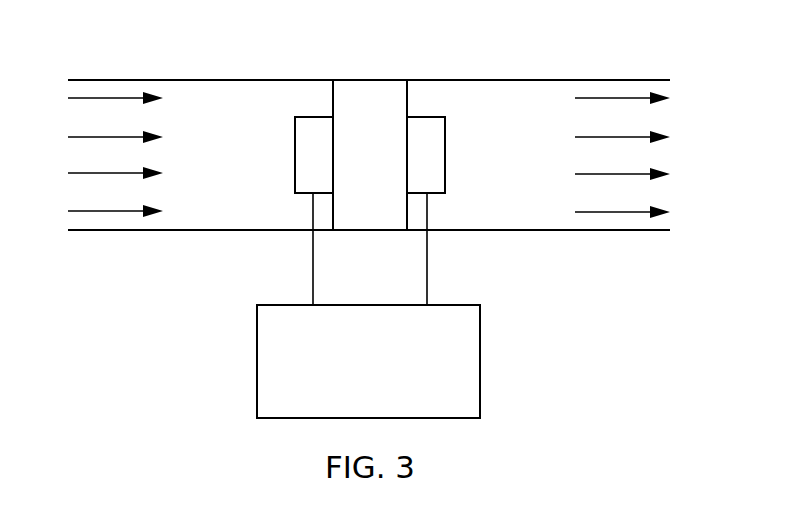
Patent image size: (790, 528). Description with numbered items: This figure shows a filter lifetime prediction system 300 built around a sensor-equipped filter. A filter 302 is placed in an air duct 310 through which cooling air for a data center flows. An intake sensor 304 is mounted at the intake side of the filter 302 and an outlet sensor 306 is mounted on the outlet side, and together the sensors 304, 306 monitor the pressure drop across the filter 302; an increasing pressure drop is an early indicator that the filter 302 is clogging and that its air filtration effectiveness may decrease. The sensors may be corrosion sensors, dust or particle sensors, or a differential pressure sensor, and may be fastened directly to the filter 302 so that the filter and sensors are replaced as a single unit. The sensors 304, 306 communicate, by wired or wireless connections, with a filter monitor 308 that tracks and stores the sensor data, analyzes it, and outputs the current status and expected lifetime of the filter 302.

The filter lifetime prediction system 300 is at (147, 355).
The filter 302 is at (372, 80).
The intake sensor 304 is at (295, 152).
The outlet sensor 306 is at (445, 158).
The filter monitor 308 is at (390, 387).
The air duct 310 is at (118, 80).